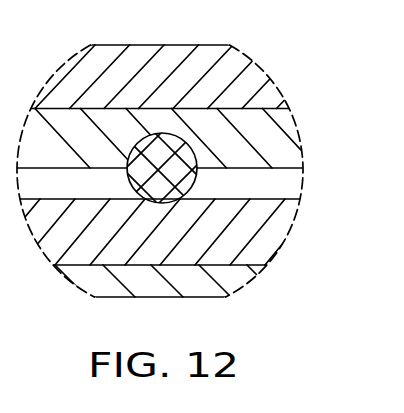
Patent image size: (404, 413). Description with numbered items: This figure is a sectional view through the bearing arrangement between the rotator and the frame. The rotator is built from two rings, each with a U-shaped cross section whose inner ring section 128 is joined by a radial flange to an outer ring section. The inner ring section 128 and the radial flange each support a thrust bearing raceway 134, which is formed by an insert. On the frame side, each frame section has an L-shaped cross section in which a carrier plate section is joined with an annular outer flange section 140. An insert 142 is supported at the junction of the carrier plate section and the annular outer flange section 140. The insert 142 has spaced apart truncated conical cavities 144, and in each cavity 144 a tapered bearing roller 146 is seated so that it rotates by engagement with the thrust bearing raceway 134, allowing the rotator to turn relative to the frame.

The inner ring section 128 is at (230, 277).
The thrust bearing raceway 134 is at (277, 230).
The annular outer flange section 140 is at (228, 75).
The insert 142 is at (280, 142).
The truncated conical cavity 144 is at (137, 138).
The tapered bearing roller 146 is at (128, 180).